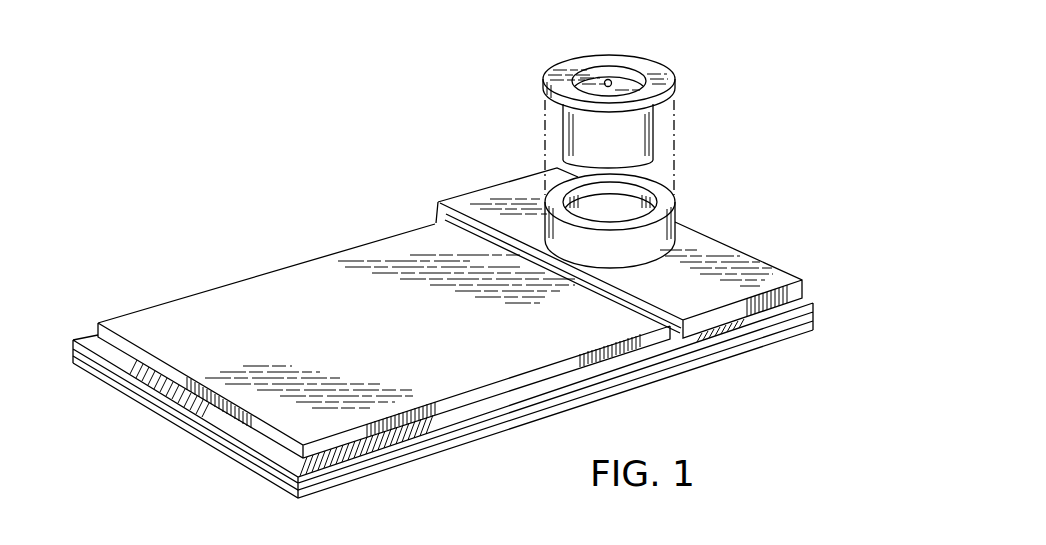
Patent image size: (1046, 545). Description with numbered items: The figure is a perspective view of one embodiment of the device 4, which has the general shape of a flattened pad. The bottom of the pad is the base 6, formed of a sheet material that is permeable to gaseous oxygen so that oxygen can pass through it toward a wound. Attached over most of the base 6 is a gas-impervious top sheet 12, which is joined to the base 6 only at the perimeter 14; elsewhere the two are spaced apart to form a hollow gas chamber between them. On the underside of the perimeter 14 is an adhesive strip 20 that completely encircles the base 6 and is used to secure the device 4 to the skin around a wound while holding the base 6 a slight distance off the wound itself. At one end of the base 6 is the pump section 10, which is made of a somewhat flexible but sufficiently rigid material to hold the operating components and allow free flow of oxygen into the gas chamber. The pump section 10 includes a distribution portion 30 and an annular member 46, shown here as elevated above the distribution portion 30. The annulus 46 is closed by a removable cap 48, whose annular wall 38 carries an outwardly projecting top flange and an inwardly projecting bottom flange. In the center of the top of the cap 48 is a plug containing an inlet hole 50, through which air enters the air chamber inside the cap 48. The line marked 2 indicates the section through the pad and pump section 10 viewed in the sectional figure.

The section line 2- 2 is at (33, 437).
The device 4 is at (255, 241).
The base 6 is at (359, 468).
The pump section 10 is at (826, 291).
The top sheet 12 is at (217, 300).
The perimeter 14 is at (660, 358).
The adhesive strip 20 is at (441, 456).
The distribution portion 30 is at (483, 196).
The annular wall 38 is at (645, 130).
The annular member 46 is at (670, 204).
The removable cap 48 is at (664, 72).
The inlet hole 50 is at (607, 80).